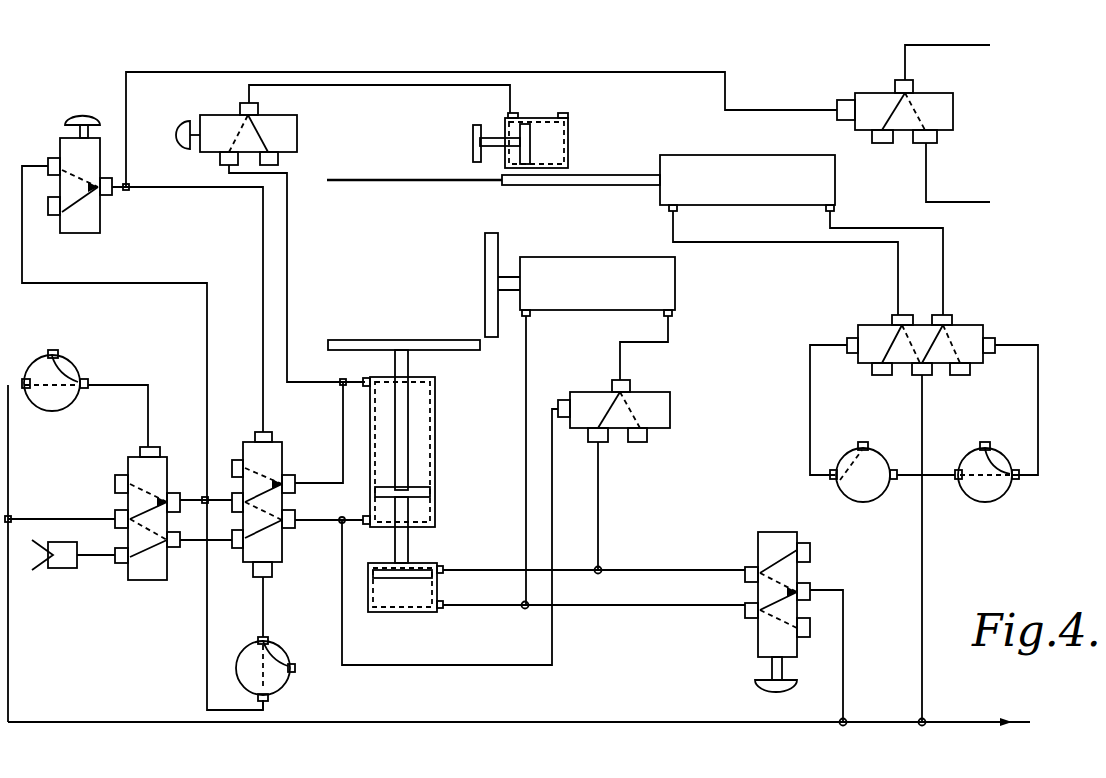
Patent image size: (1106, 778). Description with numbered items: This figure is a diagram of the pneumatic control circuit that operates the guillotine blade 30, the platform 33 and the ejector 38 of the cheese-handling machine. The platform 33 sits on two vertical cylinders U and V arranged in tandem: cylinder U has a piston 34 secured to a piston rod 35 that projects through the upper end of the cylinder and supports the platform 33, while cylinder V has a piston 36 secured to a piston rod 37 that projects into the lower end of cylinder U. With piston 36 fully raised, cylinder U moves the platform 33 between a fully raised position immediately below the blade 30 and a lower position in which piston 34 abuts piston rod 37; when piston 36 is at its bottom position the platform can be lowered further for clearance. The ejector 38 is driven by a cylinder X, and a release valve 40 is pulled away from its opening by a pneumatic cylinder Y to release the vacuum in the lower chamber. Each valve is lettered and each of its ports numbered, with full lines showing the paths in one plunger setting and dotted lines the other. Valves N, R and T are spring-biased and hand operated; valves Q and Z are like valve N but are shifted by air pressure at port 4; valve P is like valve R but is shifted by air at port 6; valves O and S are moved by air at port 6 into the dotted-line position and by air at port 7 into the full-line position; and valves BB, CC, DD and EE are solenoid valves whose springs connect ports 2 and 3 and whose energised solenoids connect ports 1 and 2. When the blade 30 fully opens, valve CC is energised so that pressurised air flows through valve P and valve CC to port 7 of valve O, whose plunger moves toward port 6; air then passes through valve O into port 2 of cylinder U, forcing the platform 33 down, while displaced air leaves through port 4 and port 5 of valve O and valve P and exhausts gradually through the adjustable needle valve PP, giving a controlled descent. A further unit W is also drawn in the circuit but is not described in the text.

The port 1 is at (50, 160).
The port 2 is at (108, 194).
The port 3 is at (52, 206).
The port 4 is at (844, 100).
The port 5 is at (874, 373).
The port 6 is at (996, 340).
The port 7 is at (850, 338).
The guillotine blade 30 is at (398, 178).
The platform 33 is at (378, 340).
The piston 34 is at (418, 492).
The piston rod 35 is at (408, 400).
The piston 36 is at (388, 578).
The piston rod 37 is at (405, 550).
The ejector 38 is at (486, 277).
The release valve 40 is at (475, 130).
The valve N is at (62, 148).
The valve T is at (285, 125).
The pneumatic cylinder Y is at (572, 134).
The valve Z is at (940, 110).
The unit W is at (747, 180).
The cylinder X is at (597, 283).
The valve Q is at (650, 412).
The cylinder U is at (435, 438).
The cylinder V is at (392, 612).
The valve S is at (965, 330).
The valve R is at (772, 535).
The valve P is at (138, 465).
The valve O is at (268, 462).
The solenoid operated valve EE is at (48, 352).
The solenoid operated valve CC is at (248, 680).
The solenoid operated valve DD is at (872, 498).
The solenoid operated valve BB is at (994, 498).
The adjustable needle valve PP is at (60, 568).